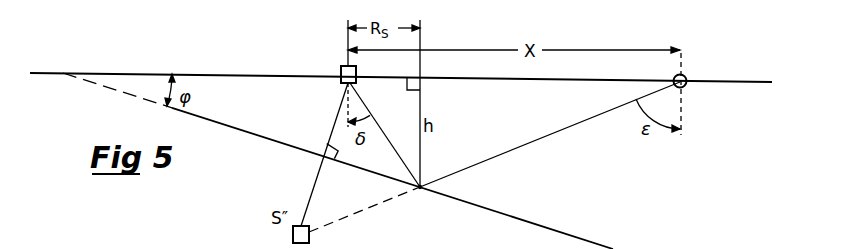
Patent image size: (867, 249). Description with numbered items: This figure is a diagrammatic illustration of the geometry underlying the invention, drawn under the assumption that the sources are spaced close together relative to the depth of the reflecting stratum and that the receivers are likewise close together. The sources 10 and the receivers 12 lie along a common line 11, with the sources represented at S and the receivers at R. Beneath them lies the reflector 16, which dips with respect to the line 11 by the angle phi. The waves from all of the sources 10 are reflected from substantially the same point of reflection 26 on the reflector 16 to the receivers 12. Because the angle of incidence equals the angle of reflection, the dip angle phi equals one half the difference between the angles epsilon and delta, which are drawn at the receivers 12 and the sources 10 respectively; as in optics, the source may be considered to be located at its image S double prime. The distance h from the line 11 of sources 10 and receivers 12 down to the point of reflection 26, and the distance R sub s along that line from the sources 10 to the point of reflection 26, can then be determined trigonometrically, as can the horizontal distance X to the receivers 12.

The sources 10 is at (358, 67).
The line 11 is at (264, 75).
The receivers 12 is at (690, 73).
The reflector 16 is at (550, 227).
The point of reflection 26 is at (420, 189).